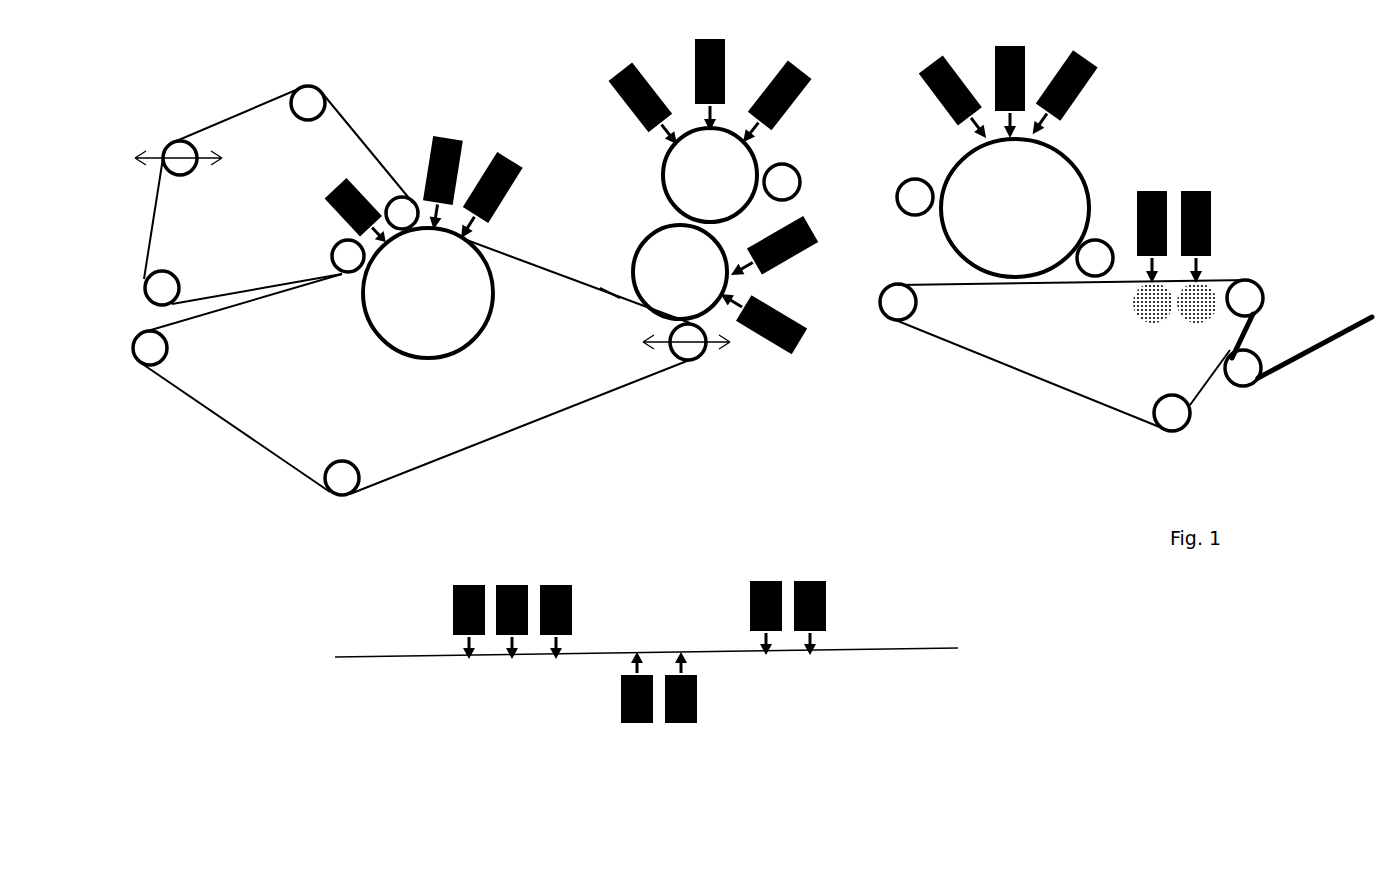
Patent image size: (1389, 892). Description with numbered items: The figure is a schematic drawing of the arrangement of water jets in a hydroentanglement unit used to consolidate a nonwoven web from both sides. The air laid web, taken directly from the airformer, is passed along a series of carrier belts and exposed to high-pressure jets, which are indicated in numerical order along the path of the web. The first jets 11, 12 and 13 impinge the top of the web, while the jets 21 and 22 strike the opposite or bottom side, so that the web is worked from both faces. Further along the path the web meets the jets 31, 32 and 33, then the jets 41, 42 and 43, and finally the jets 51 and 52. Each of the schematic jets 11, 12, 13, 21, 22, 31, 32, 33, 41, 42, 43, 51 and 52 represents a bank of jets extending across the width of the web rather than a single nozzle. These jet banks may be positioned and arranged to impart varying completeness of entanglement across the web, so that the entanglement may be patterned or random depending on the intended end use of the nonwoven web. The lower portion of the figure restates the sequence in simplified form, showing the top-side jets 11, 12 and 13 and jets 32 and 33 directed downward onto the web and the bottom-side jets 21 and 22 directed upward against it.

The jet 11 is at (395, 410).
The jet 12 is at (475, 381).
The jet 13 is at (511, 393).
The jet 21 is at (728, 524).
The jet 22 is at (762, 492).
The jet 31 is at (640, 97).
The jet 32 is at (736, 329).
The jet 33 is at (783, 346).
The jet 41 is at (949, 91).
The jet 42 is at (1012, 74).
The jet 43 is at (1069, 86).
The jet 51 is at (1151, 243).
The jet 52 is at (1197, 243).